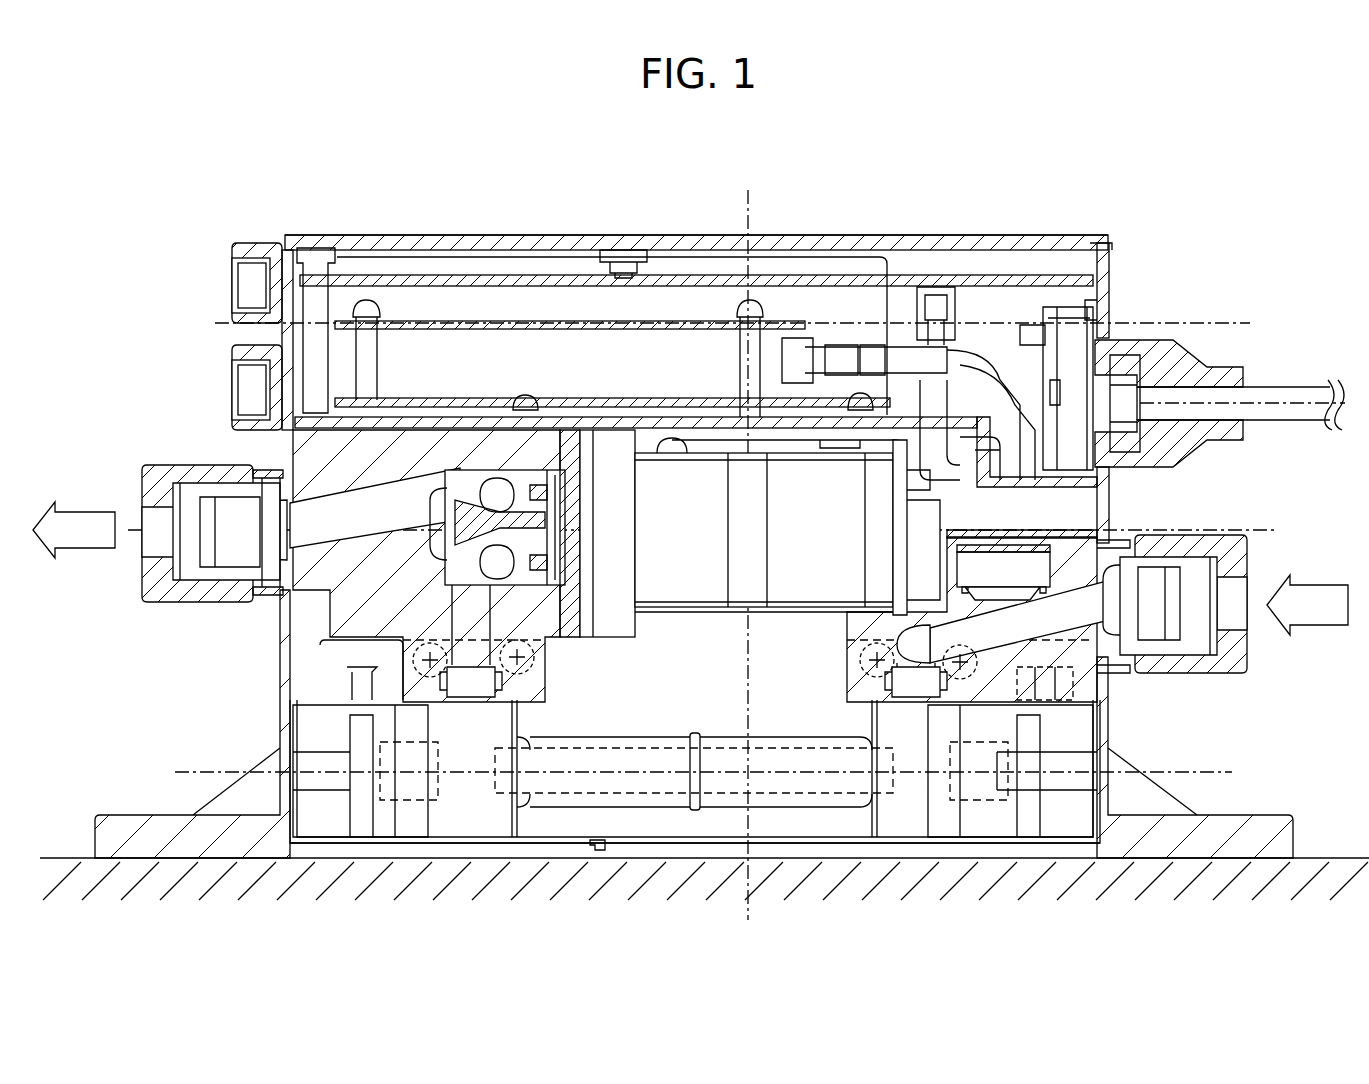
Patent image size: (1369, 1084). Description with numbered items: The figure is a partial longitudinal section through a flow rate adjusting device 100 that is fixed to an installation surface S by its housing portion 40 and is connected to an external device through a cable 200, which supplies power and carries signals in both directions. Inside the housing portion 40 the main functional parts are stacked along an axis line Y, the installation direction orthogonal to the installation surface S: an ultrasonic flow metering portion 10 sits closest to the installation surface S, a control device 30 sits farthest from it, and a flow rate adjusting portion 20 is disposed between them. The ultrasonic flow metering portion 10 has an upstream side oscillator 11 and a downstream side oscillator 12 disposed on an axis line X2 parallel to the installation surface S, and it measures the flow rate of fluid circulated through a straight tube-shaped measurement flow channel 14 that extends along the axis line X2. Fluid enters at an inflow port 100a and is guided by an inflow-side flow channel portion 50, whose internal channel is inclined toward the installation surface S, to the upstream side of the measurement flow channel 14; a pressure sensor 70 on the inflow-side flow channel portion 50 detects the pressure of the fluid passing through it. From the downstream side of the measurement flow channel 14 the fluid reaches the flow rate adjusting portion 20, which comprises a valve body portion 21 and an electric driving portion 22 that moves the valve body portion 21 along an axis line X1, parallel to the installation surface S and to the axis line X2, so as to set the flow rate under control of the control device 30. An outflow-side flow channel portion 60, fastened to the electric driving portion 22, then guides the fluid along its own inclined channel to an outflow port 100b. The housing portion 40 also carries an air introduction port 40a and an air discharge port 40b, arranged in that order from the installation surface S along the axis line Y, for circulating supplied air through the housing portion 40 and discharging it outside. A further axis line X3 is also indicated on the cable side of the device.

The flow rate adjusting device 100 is at (1045, 204).
The ultrasonic flow metering portion 10 is at (820, 805).
The upstream side oscillator 11 is at (975, 800).
The downstream side oscillator 12 is at (418, 800).
The measurement flow channel 14 is at (585, 762).
The flow rate adjusting portion 20 is at (660, 618).
The valve body portion 21 is at (470, 540).
The electric driving portion 22 is at (787, 610).
The control device 30 is at (538, 252).
The housing portion 40 is at (856, 235).
The air introduction port 40a is at (222, 360).
The air discharge port 40b is at (226, 268).
The inflow-side flow channel portion 50 is at (1125, 545).
The outflow-side flow channel portion 60 is at (266, 468).
The pressure sensor 70 is at (1012, 552).
The inflow port 100a is at (1235, 590).
The outflow port 100b is at (157, 515).
The cable 200 is at (1288, 388).
The installation surface S is at (62, 858).
The axis line X1 is at (1265, 528).
The axis line X2 is at (1190, 770).
The axis X3 is at (1190, 322).
The axis line Y is at (748, 205).